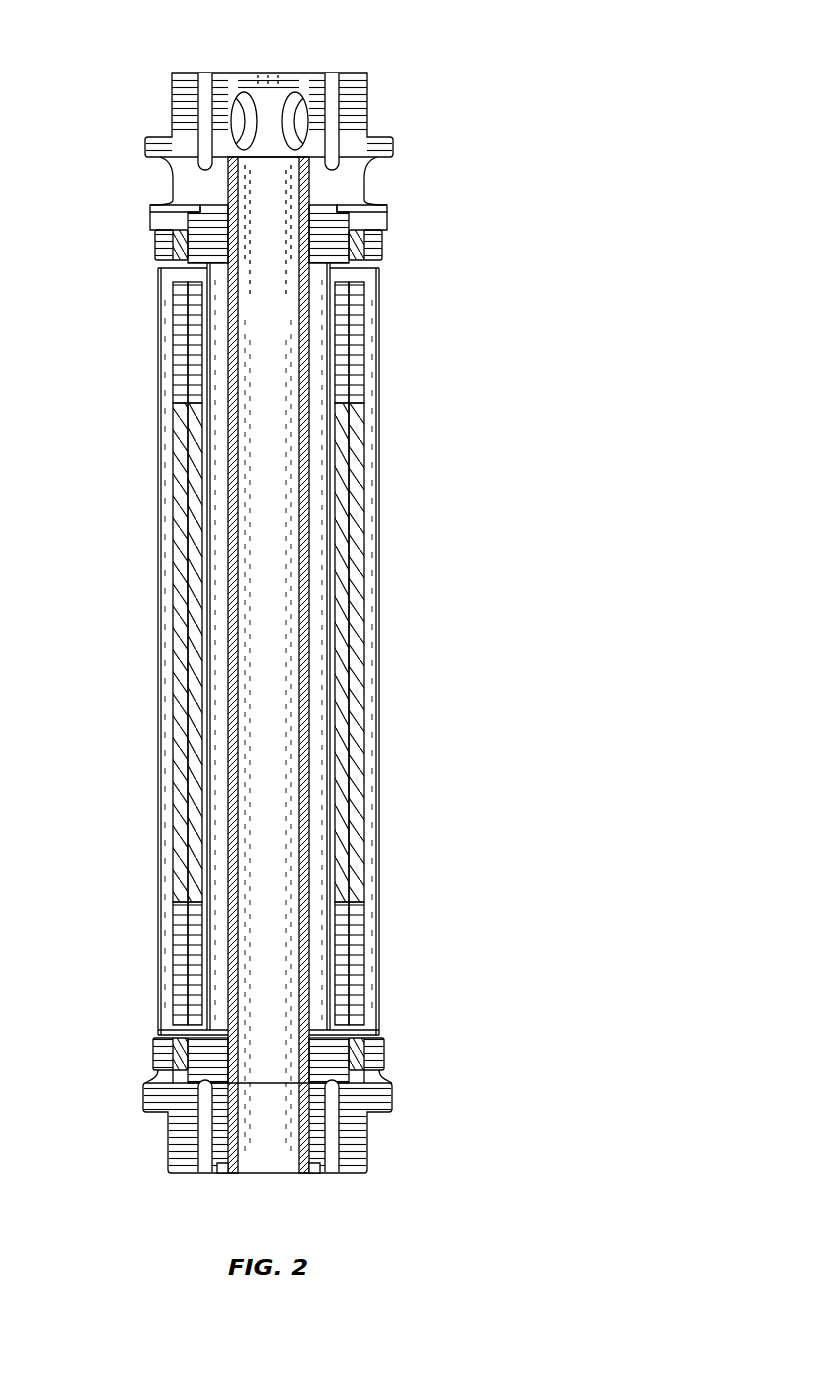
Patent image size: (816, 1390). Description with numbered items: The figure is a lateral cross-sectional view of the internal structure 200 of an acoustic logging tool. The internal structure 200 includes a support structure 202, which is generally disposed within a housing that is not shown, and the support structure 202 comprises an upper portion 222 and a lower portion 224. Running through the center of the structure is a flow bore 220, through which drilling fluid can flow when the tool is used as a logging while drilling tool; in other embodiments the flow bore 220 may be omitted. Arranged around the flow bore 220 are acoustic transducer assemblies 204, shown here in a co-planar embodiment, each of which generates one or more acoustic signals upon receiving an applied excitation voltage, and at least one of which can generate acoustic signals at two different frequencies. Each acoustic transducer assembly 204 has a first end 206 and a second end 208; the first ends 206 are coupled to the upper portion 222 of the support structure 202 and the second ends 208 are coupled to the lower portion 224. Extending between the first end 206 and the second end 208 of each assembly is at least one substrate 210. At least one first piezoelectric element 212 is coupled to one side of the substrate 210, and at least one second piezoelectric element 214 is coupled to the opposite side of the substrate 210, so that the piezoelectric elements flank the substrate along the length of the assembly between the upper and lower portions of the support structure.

The internal structure 200 is at (368, 40).
The support structure 202 is at (357, 1118).
The acoustic transducer assembly 204 is at (157, 306).
The first end 206 is at (185, 268).
The second end 208 is at (195, 1037).
The substrate 210 is at (182, 353).
The first piezoelectric element 212 is at (178, 538).
The second piezoelectric element 214 is at (193, 637).
The flow bore 220 is at (268, 1160).
The upper portion 222 is at (173, 235).
The lower portion 224 is at (200, 1058).